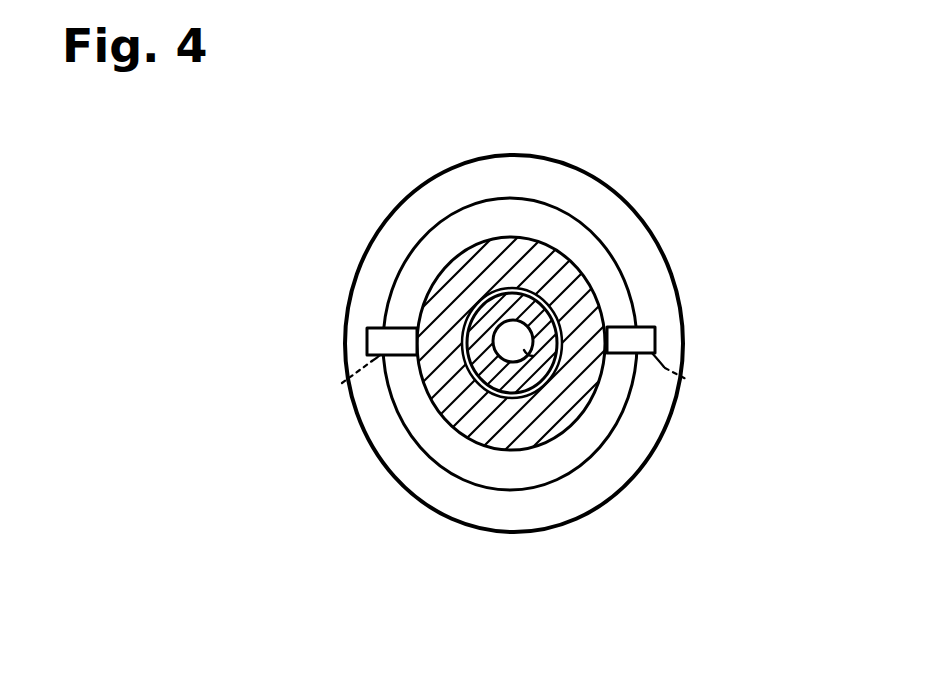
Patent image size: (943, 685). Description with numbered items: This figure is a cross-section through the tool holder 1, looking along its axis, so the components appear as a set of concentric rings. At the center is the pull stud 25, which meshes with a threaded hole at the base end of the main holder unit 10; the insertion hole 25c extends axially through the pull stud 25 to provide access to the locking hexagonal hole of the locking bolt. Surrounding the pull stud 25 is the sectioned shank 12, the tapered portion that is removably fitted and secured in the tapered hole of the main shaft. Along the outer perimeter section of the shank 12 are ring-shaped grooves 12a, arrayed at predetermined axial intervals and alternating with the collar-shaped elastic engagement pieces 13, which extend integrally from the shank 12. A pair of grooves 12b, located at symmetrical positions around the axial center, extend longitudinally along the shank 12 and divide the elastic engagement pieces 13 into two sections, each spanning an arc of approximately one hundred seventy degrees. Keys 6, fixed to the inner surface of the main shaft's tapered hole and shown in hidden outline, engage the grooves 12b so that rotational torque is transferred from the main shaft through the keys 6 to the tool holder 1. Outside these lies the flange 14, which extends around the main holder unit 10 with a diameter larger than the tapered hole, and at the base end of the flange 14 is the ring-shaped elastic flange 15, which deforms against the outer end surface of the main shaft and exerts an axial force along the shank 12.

The tool holder 1 is at (722, 227).
The main holder unit 10 is at (386, 198).
The shank 12 is at (600, 291).
The ring-shaped groove 12a is at (526, 237).
The groove 12b is at (370, 336).
The elastic engagement piece 13 is at (475, 218).
The flange 14 is at (602, 181).
The elastic flange 15 is at (367, 252).
The key 6 is at (340, 384).
The pull stud 25 is at (517, 410).
The insertion hole 25c is at (533, 356).